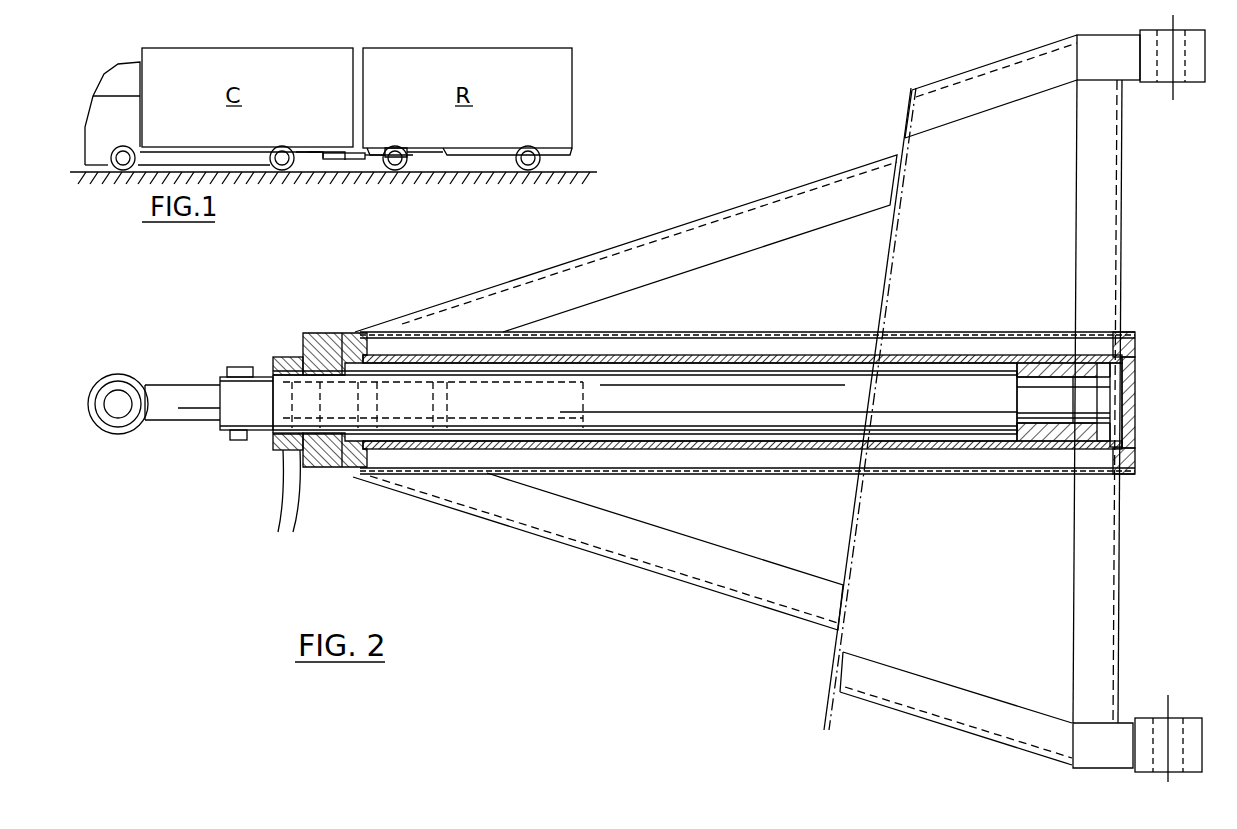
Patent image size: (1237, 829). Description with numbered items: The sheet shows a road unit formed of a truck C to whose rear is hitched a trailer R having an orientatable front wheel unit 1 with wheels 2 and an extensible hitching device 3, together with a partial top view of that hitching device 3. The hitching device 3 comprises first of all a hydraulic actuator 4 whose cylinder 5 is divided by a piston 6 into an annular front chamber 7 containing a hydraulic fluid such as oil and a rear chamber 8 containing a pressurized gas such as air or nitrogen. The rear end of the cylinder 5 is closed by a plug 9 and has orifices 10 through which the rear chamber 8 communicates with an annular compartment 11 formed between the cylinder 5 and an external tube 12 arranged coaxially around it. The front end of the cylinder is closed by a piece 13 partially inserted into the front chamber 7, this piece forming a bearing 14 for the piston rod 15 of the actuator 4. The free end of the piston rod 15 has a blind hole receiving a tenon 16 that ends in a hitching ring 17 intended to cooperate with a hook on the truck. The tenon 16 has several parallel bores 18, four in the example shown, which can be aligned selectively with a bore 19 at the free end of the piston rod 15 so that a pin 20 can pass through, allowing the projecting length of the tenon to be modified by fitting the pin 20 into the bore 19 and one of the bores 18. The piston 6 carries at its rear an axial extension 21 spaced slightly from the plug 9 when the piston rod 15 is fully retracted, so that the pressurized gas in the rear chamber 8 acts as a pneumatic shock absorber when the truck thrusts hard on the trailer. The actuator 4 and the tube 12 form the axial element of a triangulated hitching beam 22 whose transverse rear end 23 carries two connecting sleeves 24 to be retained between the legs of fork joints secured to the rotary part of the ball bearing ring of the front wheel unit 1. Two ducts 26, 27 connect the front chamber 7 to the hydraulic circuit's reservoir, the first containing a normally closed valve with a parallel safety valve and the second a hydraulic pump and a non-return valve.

In FIG. 1, the orientatable front wheel unit 1 is at (418, 165).
In FIG. 1, the wheels 2 is at (394, 172).
In FIG. 1, the extensible hitching device 3 is at (343, 160).
In FIG. 2, the extensible hitching device 3 is at (633, 582).
In FIG. 2, the hydraulic actuator 4 is at (901, 353).
In FIG. 2, the cylinder 5 is at (945, 356).
In FIG. 2, the piston 6 is at (1038, 362).
In FIG. 2, the annular front chamber 7 is at (975, 372).
In FIG. 2, the rear chamber 8 is at (1117, 403).
In FIG. 2, the plug 9 is at (1113, 426).
In FIG. 2, the orifices 10 is at (1107, 368).
In FIG. 2, the annular compartment 11 is at (829, 348).
In FIG. 2, the external tube 12 is at (687, 332).
In FIG. 2, the piece 13 is at (338, 340).
In FIG. 2, the bearing 14 is at (288, 450).
In FIG. 2, the piston rod 15 is at (747, 398).
In FIG. 2, the tenon 16 is at (160, 390).
In FIG. 2, the hitching ring 17 is at (115, 383).
In FIG. 2, the parallel bores 18 is at (214, 430).
In FIG. 2, the bore 19 is at (215, 390).
In FIG. 2, the pin 20 is at (240, 367).
In FIG. 2, the axial extension 21 is at (1133, 440).
In FIG. 2, the triangulated hitching beam 22 is at (708, 214).
In FIG. 2, the transverse rear end 23 is at (1087, 168).
In FIG. 2, the connecting sleeves 24 is at (1195, 76).
In FIG. 2, the duct 26 is at (300, 520).
In FIG. 2, the duct 27 is at (298, 522).